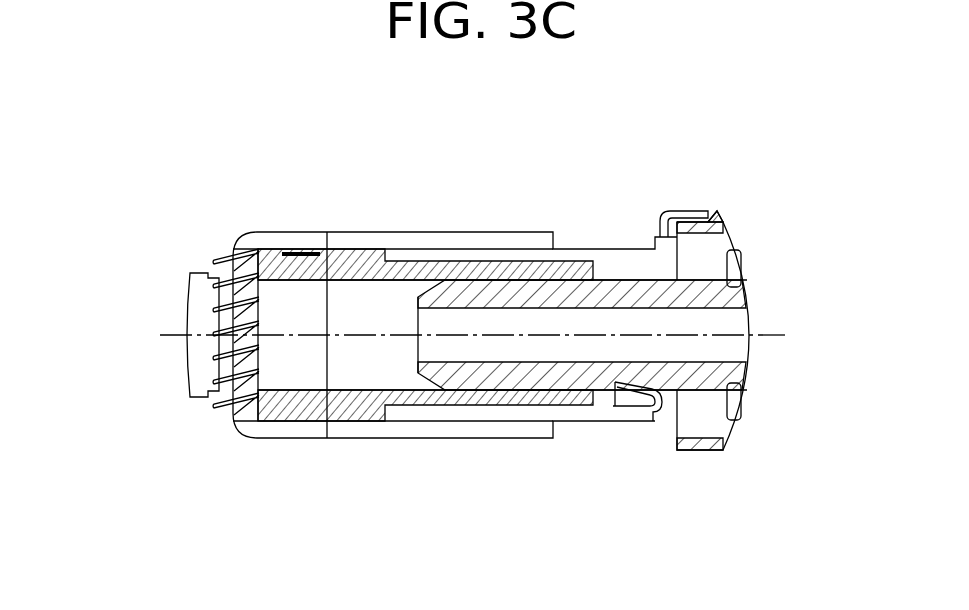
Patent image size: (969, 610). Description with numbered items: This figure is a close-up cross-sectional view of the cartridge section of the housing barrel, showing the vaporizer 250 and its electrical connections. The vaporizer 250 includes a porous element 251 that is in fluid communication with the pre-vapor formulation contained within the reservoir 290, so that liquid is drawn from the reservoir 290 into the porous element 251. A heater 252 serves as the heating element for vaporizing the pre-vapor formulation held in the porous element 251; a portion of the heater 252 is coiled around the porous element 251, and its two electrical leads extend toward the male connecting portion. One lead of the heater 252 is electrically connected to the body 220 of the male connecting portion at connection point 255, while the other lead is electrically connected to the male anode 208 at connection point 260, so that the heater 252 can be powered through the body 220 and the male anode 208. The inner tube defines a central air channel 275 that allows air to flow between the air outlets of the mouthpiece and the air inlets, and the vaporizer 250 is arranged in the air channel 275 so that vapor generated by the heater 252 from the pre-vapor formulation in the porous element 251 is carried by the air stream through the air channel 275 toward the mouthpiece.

The vaporizer 250 is at (260, 213).
The porous element 251 is at (358, 249).
The heater 252 is at (212, 260).
The male anode 208 is at (510, 296).
The connection point 255 is at (694, 210).
The body 220 is at (723, 222).
The reservoir 290 is at (190, 396).
The central air channel 275 is at (313, 368).
The connection point 260 is at (616, 384).